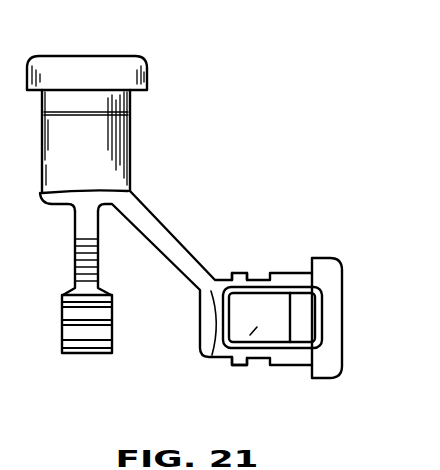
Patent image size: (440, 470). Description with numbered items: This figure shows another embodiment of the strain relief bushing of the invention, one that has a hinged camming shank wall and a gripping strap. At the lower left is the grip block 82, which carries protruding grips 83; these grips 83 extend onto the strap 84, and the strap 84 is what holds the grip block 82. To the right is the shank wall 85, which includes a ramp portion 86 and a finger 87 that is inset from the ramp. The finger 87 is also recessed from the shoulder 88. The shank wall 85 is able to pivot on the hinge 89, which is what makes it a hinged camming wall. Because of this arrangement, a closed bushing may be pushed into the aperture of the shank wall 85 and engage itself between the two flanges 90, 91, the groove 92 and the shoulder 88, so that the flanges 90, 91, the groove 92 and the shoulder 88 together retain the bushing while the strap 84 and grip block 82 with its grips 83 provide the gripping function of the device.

The flange 91 is at (82, 70).
The groove 92 is at (132, 98).
The strap 84 is at (100, 258).
The protruding grips 83 is at (62, 342).
The grip block 82 is at (112, 333).
The hinge 89 is at (237, 300).
The shank wall 85 is at (263, 310).
The finger 87 is at (295, 313).
The ramp portion 86 is at (245, 350).
The shoulder 88 is at (290, 335).
The flange 90 is at (345, 348).